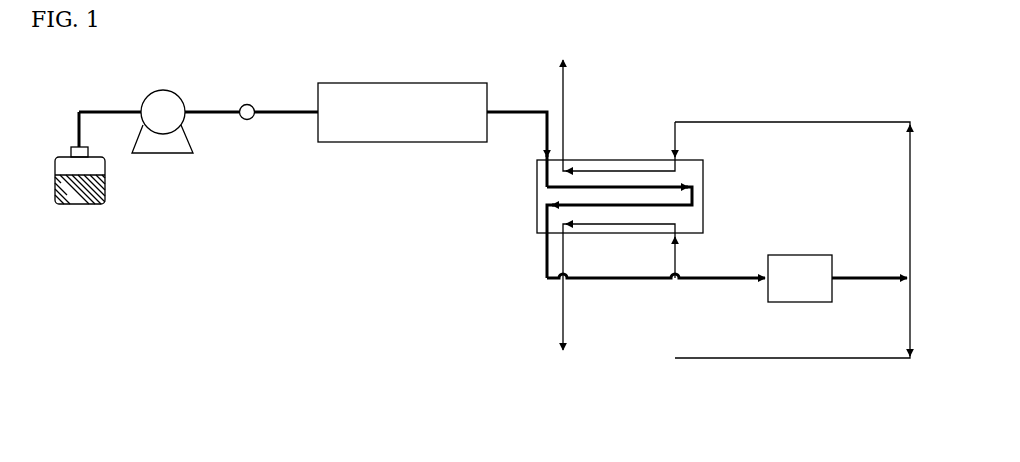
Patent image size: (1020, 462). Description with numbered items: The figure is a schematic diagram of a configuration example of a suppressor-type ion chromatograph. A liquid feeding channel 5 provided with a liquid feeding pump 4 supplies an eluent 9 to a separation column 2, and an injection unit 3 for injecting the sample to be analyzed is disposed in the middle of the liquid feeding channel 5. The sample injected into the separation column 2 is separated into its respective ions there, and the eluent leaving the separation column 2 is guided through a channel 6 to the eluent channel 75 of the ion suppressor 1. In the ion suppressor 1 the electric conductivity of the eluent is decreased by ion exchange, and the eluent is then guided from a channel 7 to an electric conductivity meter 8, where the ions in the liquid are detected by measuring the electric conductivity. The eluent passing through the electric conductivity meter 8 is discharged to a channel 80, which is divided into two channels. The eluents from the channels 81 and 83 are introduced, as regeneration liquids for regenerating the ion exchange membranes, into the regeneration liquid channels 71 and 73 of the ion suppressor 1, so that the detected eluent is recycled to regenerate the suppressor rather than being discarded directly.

The ion suppressor 1 is at (540, 200).
The separation column 2 is at (393, 143).
The injection unit 3 is at (245, 120).
The liquid feeding pump 4 is at (155, 100).
The liquid feeding channel 5 is at (296, 115).
The channel 6 is at (513, 116).
The channel 7 is at (728, 275).
The electric conductivity meter 8 is at (802, 257).
The eluent 9 is at (77, 206).
The regeneration liquid channel 71 is at (644, 170).
The regeneration liquid channel 73 is at (660, 228).
The eluent channel 75 is at (620, 204).
The channel 80 is at (860, 276).
The channel 81 is at (783, 121).
The channel 83 is at (768, 360).